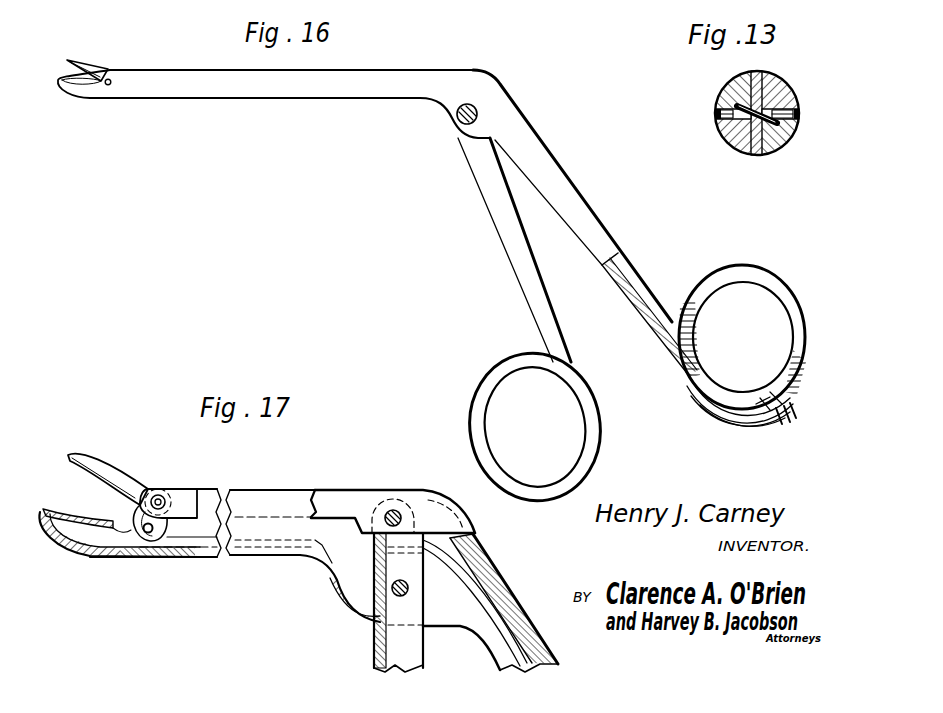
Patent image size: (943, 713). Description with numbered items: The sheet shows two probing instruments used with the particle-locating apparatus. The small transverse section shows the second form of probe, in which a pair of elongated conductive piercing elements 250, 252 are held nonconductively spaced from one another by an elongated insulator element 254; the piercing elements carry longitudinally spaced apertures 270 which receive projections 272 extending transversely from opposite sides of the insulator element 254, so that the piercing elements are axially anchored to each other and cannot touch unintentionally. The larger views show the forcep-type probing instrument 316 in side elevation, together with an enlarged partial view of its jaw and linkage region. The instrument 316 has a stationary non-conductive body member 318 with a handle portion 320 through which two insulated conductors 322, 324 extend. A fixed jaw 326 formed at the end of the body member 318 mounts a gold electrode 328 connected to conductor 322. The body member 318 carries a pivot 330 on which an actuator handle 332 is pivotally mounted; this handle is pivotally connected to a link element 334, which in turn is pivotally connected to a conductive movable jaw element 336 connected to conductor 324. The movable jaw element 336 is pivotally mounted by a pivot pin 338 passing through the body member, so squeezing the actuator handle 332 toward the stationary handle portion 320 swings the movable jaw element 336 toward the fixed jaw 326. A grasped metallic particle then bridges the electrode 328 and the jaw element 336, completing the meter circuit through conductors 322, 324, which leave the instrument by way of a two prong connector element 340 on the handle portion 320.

In FIG. 16, the probing instrument 316 is at (151, 57).
In FIG. 16, the stationary non-conductive body member 318 is at (384, 71).
In FIG. 17, the stationary non-conductive body member 318 is at (262, 522).
In FIG. 16, the handle portion 320 is at (538, 153).
In FIG. 17, the handle portion 320 is at (505, 607).
In FIG. 17, the insulated conductor 322 is at (458, 566).
In FIG. 17, the insulated conductor 324 is at (456, 567).
In FIG. 17, the fixed jaw 326 is at (80, 540).
In FIG. 17, the gold electrode 328 is at (62, 514).
In FIG. 17, the pivot 330 is at (388, 590).
In FIG. 16, the actuator handle 332 is at (506, 232).
In FIG. 17, the actuator handle 332 is at (395, 643).
In FIG. 17, the link element 334 is at (340, 500).
In FIG. 17, the movable jaw element 336 is at (122, 480).
In FIG. 16, the pivot pin 338 is at (107, 87).
In FIG. 17, the pivot pin 338 is at (150, 535).
In FIG. 16, the two prong connector element 340 is at (762, 414).
In FIG. 13, the piercing element 250 is at (786, 93).
In FIG. 13, the piercing element 252 is at (728, 96).
In FIG. 13, the insulator element 254 is at (739, 142).
In FIG. 13, the aperture 270 is at (722, 130).
In FIG. 13, the projection 272 is at (786, 135).